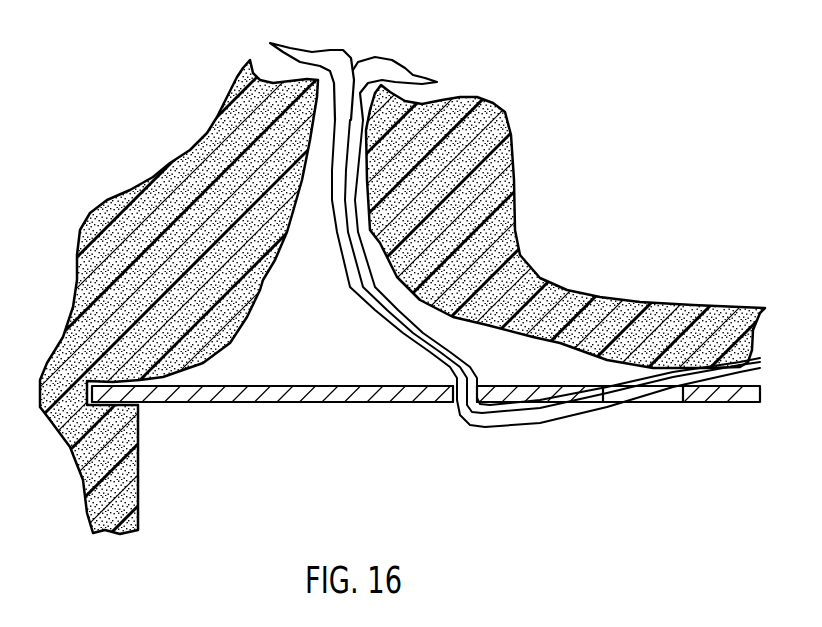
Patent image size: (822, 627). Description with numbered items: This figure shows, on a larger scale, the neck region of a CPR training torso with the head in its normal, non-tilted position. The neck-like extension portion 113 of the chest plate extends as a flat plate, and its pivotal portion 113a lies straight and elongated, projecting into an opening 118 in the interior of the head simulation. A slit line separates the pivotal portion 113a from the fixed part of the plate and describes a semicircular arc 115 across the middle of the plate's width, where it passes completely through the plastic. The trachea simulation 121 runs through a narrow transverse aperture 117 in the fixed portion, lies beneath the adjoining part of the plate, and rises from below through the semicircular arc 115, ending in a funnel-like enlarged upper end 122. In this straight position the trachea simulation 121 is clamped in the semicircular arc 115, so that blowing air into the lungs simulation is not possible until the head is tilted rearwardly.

The neck-like extension portion 113 is at (427, 401).
The pivotal portion 113a is at (288, 403).
The semicircular arc 115 is at (473, 385).
The aperture 117 is at (672, 396).
The opening 118 is at (140, 407).
The trachea simulation 121 is at (350, 287).
The upper end 122 is at (405, 72).